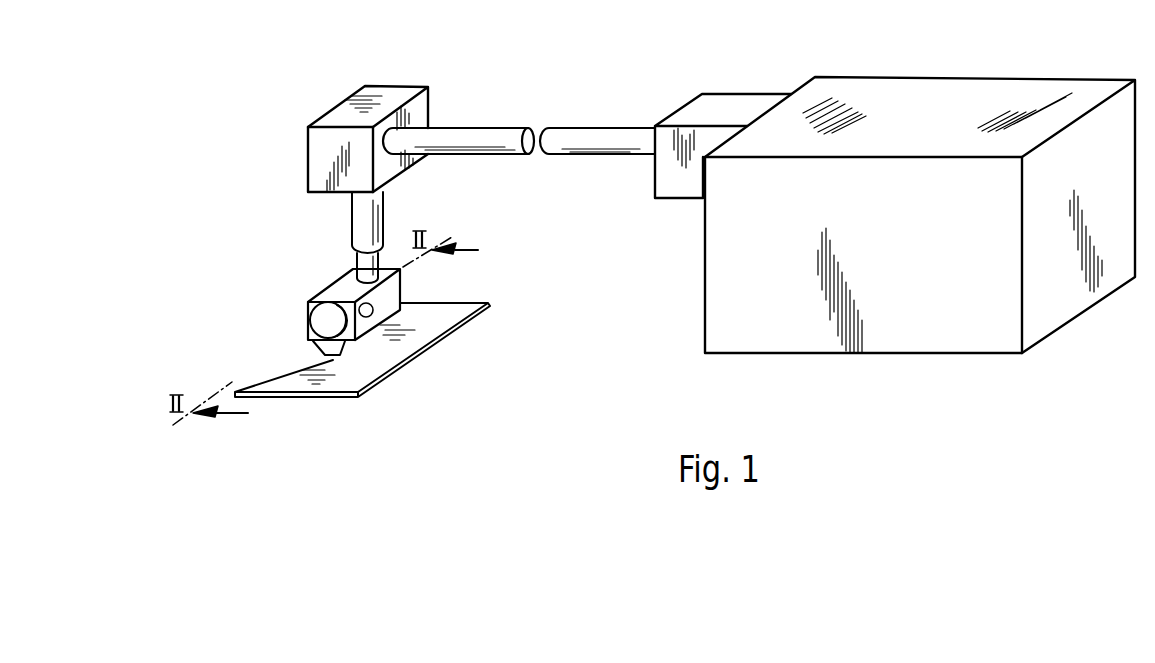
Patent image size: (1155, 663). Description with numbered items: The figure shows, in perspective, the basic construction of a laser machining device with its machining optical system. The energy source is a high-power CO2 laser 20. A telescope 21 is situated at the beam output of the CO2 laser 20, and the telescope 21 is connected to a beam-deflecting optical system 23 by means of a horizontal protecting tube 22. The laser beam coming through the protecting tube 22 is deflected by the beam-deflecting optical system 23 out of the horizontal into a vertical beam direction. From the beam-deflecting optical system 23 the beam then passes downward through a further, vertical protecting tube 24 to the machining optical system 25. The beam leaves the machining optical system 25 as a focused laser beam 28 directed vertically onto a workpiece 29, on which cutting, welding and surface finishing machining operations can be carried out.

The CO2 laser 20 is at (920, 97).
The telescope 21 is at (727, 108).
The protecting tube 22 is at (493, 137).
The beam-deflecting optical system 23 is at (393, 95).
The protecting tube 24 is at (360, 223).
The machining optical system 25 is at (382, 311).
The focused laser beam 28 is at (331, 360).
The workpiece 29 is at (367, 369).